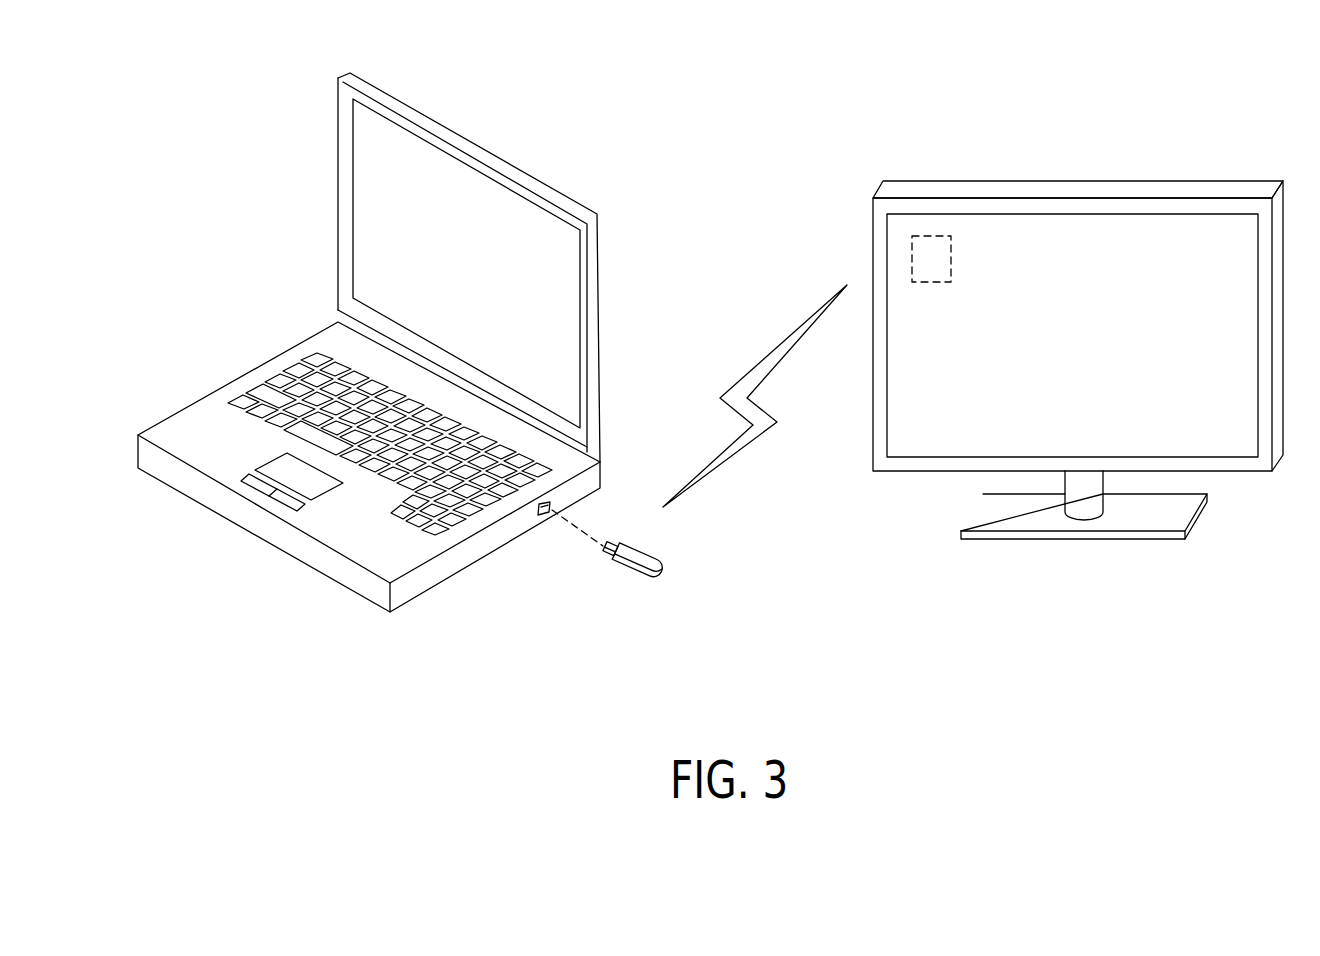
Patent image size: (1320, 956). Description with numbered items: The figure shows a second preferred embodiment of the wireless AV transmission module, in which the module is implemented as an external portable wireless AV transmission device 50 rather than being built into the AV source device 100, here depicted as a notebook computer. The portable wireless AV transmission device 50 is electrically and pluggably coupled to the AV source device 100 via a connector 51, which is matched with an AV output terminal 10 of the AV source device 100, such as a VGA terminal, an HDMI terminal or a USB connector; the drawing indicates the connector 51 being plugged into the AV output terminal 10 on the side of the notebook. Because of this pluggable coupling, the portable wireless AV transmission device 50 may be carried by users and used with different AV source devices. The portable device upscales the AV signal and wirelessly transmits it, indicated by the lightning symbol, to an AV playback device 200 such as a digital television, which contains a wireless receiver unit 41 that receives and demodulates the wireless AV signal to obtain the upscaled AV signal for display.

The AV source device 100 is at (528, 178).
The AV output terminal 10 is at (538, 515).
The portable wireless AV transmission device 50 is at (638, 558).
The connector 51 is at (603, 552).
The AV playback device 200 is at (1062, 187).
The wireless receiver unit 41 is at (938, 235).